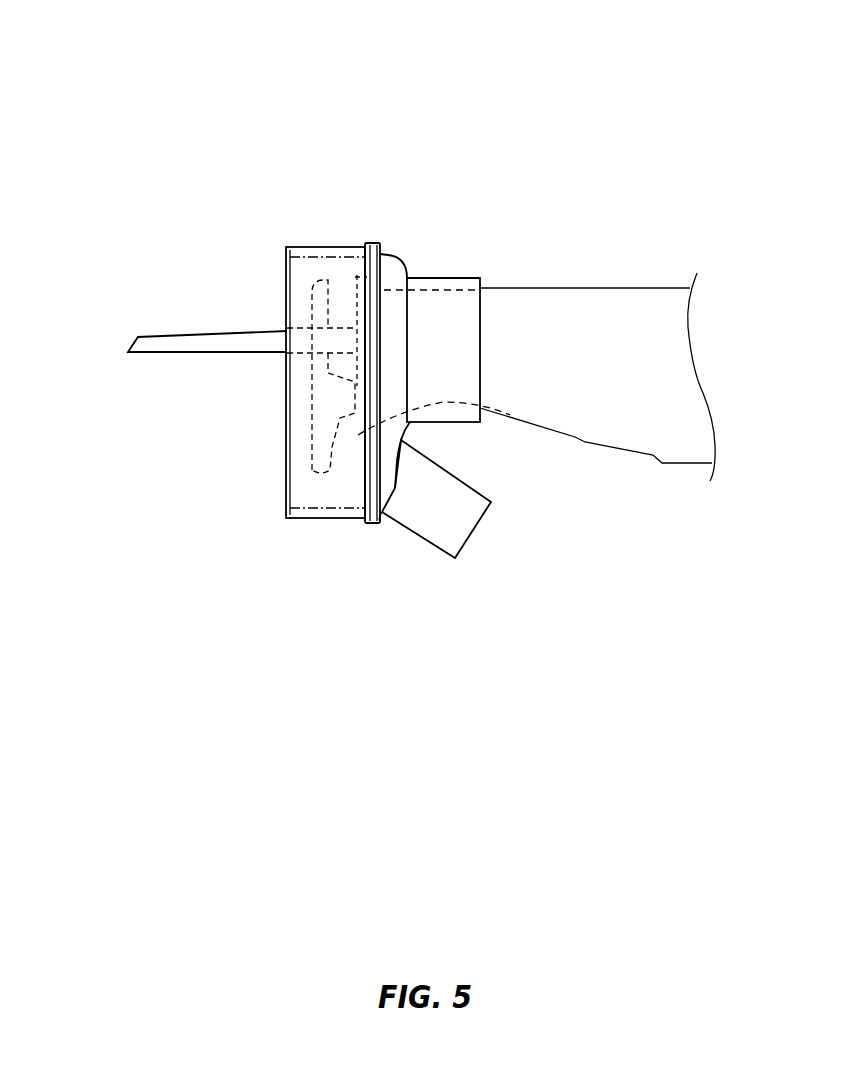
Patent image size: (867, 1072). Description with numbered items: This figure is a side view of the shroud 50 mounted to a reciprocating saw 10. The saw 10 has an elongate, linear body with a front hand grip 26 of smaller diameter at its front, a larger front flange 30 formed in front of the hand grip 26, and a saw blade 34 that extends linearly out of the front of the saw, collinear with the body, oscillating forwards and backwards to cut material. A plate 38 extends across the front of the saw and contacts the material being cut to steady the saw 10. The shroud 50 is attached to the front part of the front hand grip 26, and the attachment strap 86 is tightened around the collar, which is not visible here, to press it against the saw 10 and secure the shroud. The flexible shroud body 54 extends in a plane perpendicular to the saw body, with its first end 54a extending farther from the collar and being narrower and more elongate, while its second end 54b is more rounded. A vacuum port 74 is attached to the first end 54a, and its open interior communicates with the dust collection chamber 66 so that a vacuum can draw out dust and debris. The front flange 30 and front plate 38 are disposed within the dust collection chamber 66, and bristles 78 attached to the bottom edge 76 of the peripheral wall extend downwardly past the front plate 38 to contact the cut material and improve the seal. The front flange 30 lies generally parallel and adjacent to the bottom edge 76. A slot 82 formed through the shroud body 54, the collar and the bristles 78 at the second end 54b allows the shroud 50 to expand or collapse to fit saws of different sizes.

The reciprocating saw 10 is at (654, 357).
The front hand grip 26 is at (550, 392).
The front flange 30 is at (376, 277).
The saw blade 34 is at (202, 342).
The plate 38 is at (343, 402).
The shroud 50 is at (226, 146).
The shroud body 54 is at (395, 320).
The first end of the shroud body 54a is at (395, 486).
The second end of the shroud body 54b is at (390, 253).
The dust collection chamber 66 is at (281, 279).
The vacuum port 74 is at (428, 530).
The bottom edge 76 is at (370, 242).
The bristles 78 is at (313, 484).
The slot 82 is at (344, 235).
The attachment strap 86 is at (458, 277).